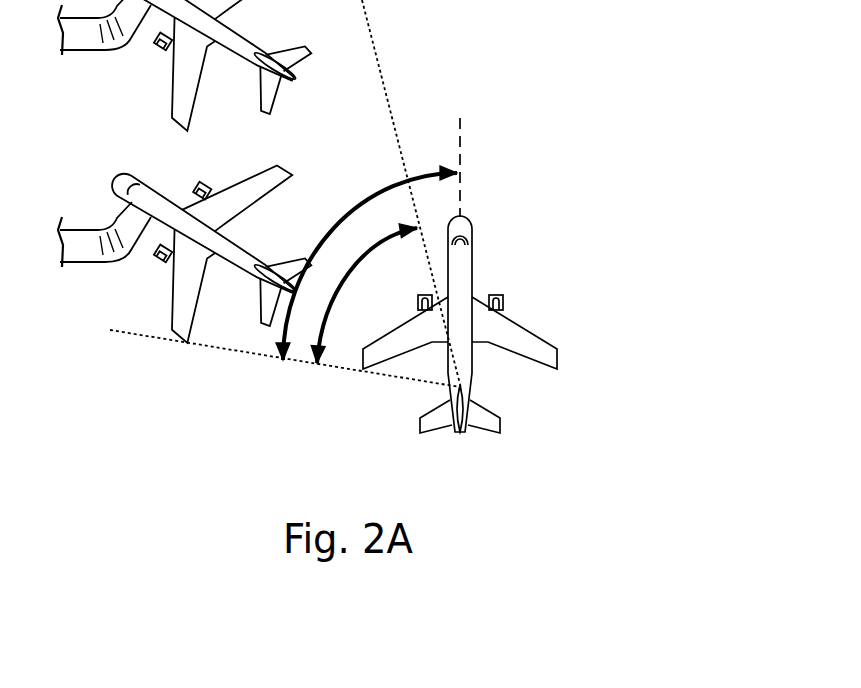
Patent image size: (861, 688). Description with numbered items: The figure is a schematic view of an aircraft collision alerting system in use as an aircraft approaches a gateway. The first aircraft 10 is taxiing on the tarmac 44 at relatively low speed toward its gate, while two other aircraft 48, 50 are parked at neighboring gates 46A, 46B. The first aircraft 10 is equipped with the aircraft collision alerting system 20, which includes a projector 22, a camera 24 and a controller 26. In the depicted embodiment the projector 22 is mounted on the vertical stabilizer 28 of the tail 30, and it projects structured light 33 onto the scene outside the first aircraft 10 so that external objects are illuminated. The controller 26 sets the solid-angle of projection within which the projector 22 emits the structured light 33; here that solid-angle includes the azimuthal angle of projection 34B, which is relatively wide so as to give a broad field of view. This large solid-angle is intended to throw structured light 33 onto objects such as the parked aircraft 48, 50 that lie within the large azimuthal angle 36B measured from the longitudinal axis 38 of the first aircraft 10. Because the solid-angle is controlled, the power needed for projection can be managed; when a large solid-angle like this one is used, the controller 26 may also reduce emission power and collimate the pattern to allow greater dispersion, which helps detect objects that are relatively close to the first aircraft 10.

The first aircraft 10 is at (442, 355).
The aircraft collision alerting system 20 is at (400, 405).
The projector 22 is at (457, 392).
The camera 24 is at (445, 296).
The controller 26 is at (484, 297).
The vertical stabilizer 28 is at (478, 413).
The tail 30 is at (450, 435).
The structured light 33 is at (384, 76).
The azimuthal angle of projection 34B is at (341, 292).
The large azimuthal angle 36B is at (343, 258).
The longitudinal axis 38 is at (462, 146).
The tarmac 44 is at (577, 176).
The gate 46A is at (93, 264).
The gate 46B is at (83, 52).
The aircraft 48 is at (259, 244).
The aircraft 50 is at (202, 82).